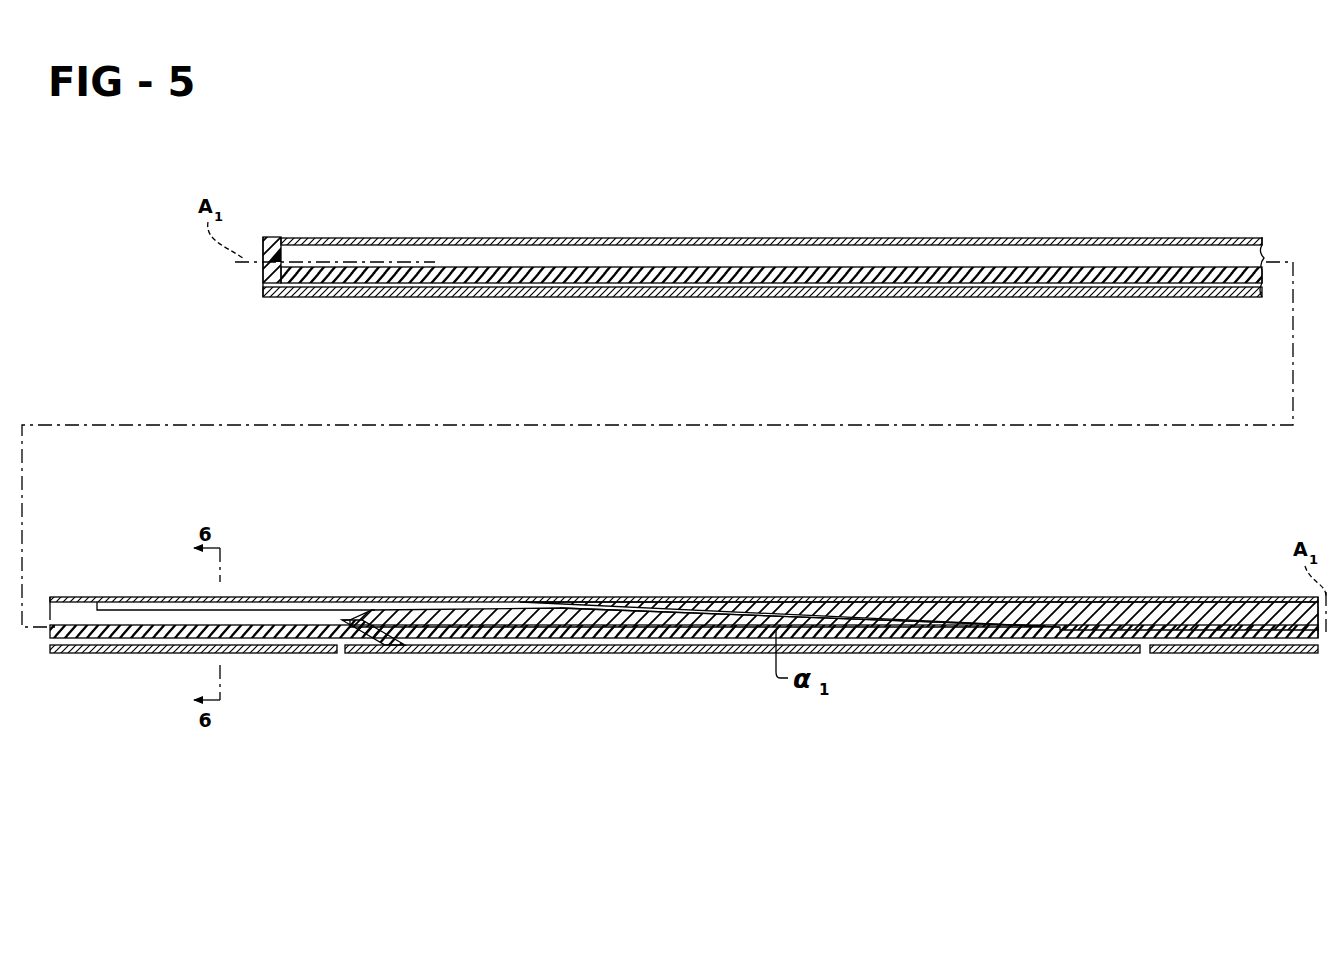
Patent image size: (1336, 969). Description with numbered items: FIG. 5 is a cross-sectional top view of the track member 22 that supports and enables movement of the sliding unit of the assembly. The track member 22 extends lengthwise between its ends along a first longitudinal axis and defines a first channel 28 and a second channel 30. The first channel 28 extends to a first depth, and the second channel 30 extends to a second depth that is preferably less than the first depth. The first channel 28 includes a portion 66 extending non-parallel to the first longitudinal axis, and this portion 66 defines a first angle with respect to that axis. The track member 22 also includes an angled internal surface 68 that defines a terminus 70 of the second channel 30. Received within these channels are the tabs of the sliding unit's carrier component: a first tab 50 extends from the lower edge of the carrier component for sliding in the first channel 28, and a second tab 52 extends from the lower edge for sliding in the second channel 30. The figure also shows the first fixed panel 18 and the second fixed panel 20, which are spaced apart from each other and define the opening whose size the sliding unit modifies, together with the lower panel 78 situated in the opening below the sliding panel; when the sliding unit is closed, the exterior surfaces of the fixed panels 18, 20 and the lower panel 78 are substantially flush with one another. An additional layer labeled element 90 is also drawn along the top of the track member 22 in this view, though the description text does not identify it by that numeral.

The first fixed panel 18 is at (588, 297).
The second fixed panel 20 is at (1252, 653).
The track member 22 is at (253, 278).
The first channel 28 is at (560, 612).
The second channel 30 is at (842, 252).
The first tab 50 is at (1058, 637).
The second tab 52 is at (378, 645).
The portion 66 is at (484, 600).
The angled internal surface 68 is at (380, 617).
The terminus 70 is at (366, 614).
The lower panel 78 is at (705, 653).
The top layer 90 is at (676, 238).